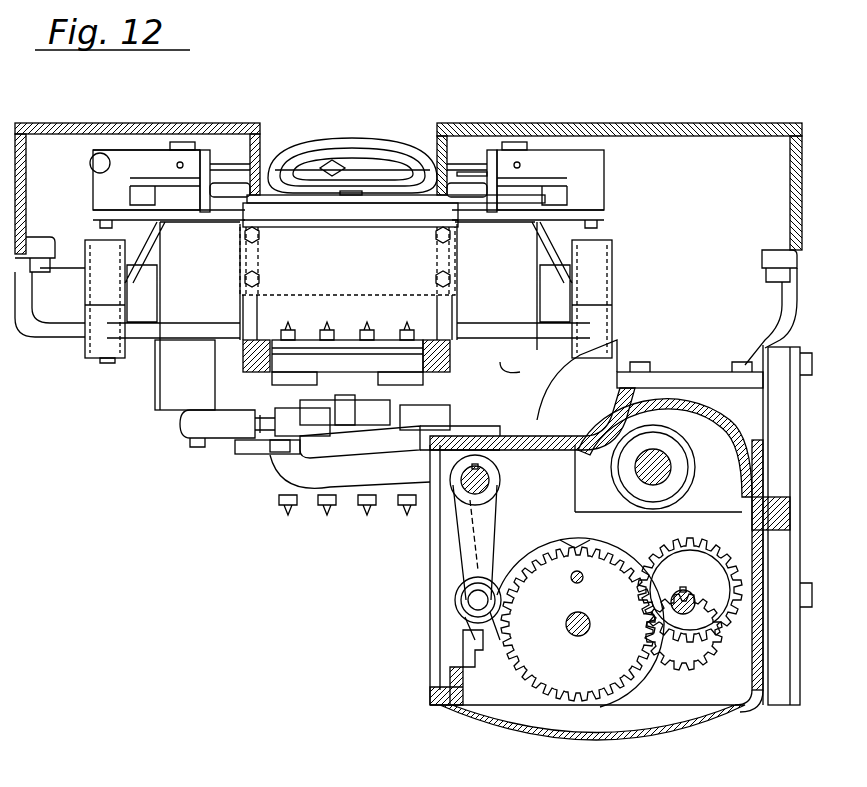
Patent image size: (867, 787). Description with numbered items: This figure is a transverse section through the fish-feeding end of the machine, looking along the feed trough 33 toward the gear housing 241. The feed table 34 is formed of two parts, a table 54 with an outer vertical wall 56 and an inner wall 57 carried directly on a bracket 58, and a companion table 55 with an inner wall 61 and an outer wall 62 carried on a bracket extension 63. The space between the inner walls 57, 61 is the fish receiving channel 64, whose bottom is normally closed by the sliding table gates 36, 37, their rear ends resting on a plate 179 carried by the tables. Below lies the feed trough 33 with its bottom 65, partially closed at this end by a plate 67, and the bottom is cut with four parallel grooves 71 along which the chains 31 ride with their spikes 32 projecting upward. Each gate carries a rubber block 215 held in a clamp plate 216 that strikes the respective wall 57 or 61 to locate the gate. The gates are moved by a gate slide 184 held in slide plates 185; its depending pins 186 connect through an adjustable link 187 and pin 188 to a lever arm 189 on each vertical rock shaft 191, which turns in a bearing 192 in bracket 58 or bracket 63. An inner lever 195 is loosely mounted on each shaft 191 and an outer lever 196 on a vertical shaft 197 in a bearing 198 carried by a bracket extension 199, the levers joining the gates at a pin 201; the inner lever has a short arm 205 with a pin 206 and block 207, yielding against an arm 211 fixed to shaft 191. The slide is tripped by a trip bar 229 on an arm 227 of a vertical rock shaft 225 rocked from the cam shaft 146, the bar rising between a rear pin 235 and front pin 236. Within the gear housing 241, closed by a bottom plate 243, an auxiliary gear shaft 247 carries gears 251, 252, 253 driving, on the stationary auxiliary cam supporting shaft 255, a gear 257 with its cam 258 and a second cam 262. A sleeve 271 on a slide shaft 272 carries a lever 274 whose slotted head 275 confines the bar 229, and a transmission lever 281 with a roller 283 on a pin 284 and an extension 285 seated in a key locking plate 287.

The feed table 34 is at (685, 105).
The table 54 is at (627, 124).
The table 55 is at (115, 124).
The outer vertical wall 56 is at (791, 180).
The inner wall 57 is at (440, 145).
The bracket 58 is at (707, 328).
The inner wall 61 is at (258, 128).
The outer wall 62 is at (26, 178).
The bracket extension 63 is at (50, 304).
The fish receiving channel 64 is at (397, 117).
The bottom 65 is at (450, 360).
The plate 67 is at (347, 261).
The grooves 71 is at (300, 340).
The chains 31 is at (407, 330).
The spikes 32 is at (367, 330).
The feed trough 33 is at (262, 333).
The table gate 36 is at (405, 196).
The table gate 37 is at (292, 196).
The cam shaft 146 is at (673, 465).
The plate 179 is at (335, 200).
The gate slide 184 is at (347, 364).
The slide plates 185 is at (272, 380).
The depending pins 186 is at (292, 443).
The adjustable link 187 is at (245, 437).
The pin 188 is at (195, 440).
The lever arm 189 is at (158, 394).
The vertical rock shaft 191 is at (183, 140).
The bearing 192 is at (347, 243).
The inner lever 195 is at (210, 198).
The outer lever 196 is at (110, 224).
The vertical shaft 197 is at (110, 232).
The bearing 198 is at (90, 345).
The bracket extension 199 is at (150, 330).
The pin 201 is at (130, 184).
The short arm 205 is at (105, 199).
The pin 206 is at (105, 153).
The block 207 is at (100, 162).
The arm 211 is at (330, 160).
The rubber block 215 is at (463, 177).
The clamp plate 216 is at (468, 170).
The vertical rock shaft 225 is at (505, 408).
The arm 227 is at (470, 440).
The trip bar 229 is at (362, 432).
The rear pin 235 is at (355, 405).
The front pin 236 is at (340, 405).
The gear housing 241 is at (763, 685).
The bottom plate 243 is at (620, 740).
The auxiliary gear shaft 247 is at (683, 641).
The gear 251 is at (683, 592).
The gear 252 is at (708, 555).
The gear 253 is at (687, 540).
The auxiliary cam supporting shaft 255 is at (578, 640).
The gear 257 is at (588, 588).
The cam 258 is at (540, 548).
The cam 262 is at (618, 546).
The sleeve 271 is at (490, 470).
The slide shaft 272 is at (490, 482).
The lever 274 is at (350, 471).
The slotted head 275 is at (262, 450).
The transmission lever 281 is at (470, 548).
The roller 283 is at (465, 600).
The pin 284 is at (500, 602).
The extension 285 is at (508, 660).
The key locking plate 287 is at (463, 648).